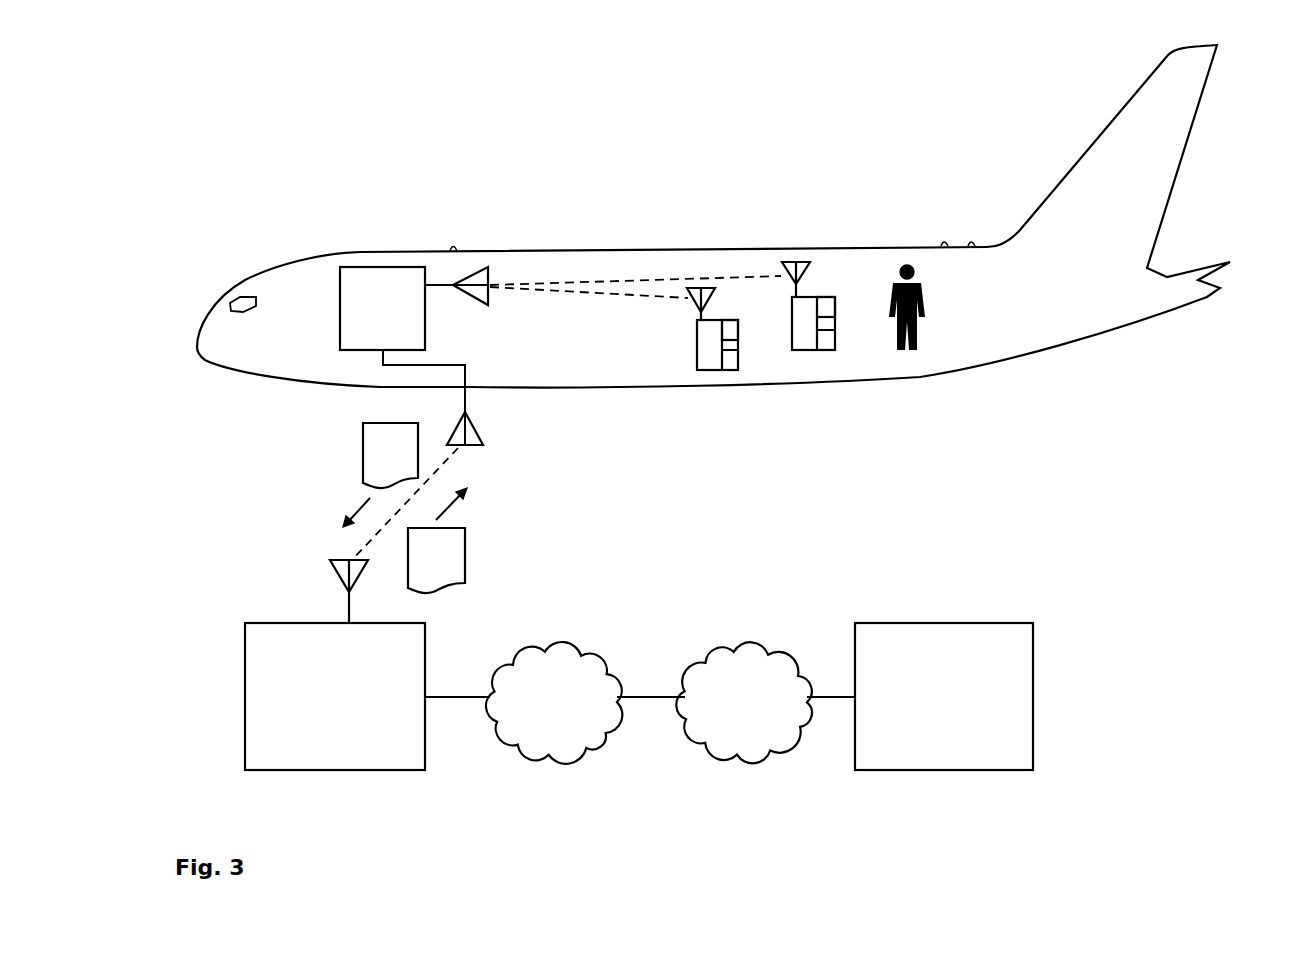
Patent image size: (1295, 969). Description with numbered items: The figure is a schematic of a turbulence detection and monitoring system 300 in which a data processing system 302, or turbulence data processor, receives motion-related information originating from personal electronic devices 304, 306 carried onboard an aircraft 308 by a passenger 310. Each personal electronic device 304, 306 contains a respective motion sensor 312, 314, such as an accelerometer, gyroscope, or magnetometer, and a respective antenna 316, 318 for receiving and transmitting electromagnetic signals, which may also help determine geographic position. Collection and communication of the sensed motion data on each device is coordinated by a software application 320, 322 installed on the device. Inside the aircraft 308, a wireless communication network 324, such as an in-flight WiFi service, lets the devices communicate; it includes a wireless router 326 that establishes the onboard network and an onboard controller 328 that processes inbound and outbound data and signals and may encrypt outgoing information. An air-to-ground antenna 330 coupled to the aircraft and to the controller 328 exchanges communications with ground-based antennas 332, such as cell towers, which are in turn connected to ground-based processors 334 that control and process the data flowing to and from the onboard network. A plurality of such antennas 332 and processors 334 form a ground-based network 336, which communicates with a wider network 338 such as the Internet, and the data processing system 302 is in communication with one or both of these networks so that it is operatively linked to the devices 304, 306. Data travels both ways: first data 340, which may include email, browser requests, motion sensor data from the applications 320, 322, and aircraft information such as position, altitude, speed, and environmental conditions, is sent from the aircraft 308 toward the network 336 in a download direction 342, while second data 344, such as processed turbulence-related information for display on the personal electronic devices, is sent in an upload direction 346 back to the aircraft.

The turbulence detection and monitoring system 300 is at (1097, 547).
The data processing system 302 is at (964, 703).
The personal electronic device 304 is at (691, 389).
The personal electronic device 306 is at (840, 340).
The aircraft 308 is at (1065, 314).
The passenger 310 is at (907, 265).
The motion sensor 312 is at (733, 370).
The motion sensor 314 is at (835, 338).
The antenna 316 is at (716, 290).
The antenna 318 is at (808, 268).
The software application 320 is at (738, 328).
The software application 322 is at (828, 312).
The wireless communication network 324 is at (600, 268).
The wireless router 326 is at (471, 265).
The onboard controller 328 is at (403, 320).
The air-to-ground antenna 330 is at (477, 428).
The ground-based antenna 332 is at (336, 583).
The ground-based processor 334 is at (355, 703).
The ground-based network 336 is at (576, 709).
The wider network 338 is at (766, 709).
The first data 340 is at (411, 469).
The download direction 342 is at (366, 500).
The second data 344 is at (457, 574).
The upload direction 346 is at (455, 508).